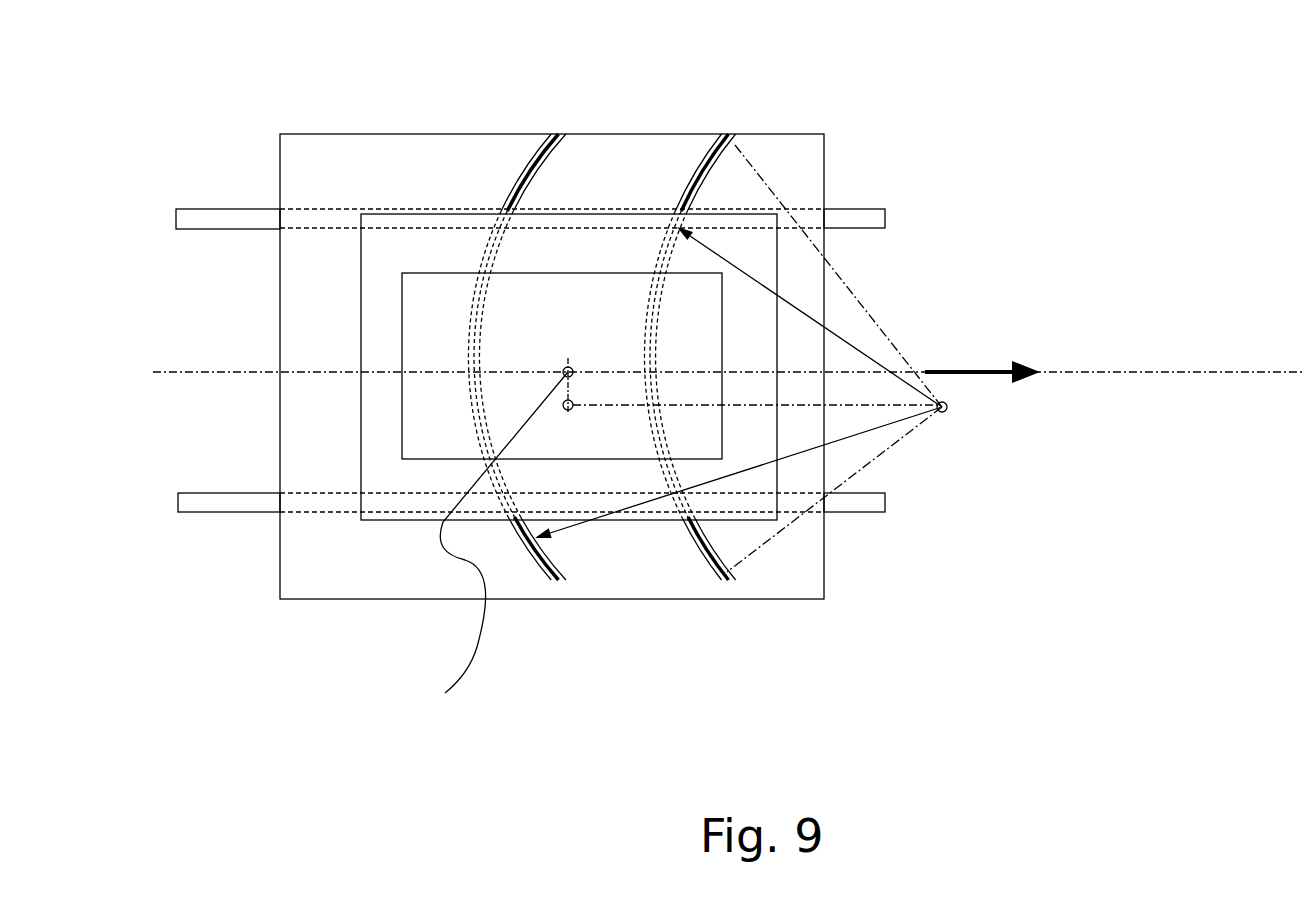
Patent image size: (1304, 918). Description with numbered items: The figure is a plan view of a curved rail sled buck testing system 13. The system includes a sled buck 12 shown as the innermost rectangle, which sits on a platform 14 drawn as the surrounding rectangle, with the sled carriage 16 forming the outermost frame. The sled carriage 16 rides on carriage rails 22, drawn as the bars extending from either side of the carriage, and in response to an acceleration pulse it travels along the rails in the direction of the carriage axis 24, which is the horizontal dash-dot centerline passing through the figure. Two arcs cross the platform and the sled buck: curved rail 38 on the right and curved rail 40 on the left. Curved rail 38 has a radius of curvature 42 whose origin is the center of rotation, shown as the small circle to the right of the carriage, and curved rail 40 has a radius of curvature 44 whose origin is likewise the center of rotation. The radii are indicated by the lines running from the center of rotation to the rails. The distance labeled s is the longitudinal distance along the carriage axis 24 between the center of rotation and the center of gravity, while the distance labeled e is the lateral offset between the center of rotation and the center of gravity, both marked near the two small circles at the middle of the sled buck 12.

The sled buck 12 is at (570, 290).
The curved rail sled buck testing system 13 is at (1043, 118).
The platform 14 is at (607, 477).
The sled carriage 16 is at (342, 582).
The carriage rails 22 is at (228, 220).
The carriage axis 24 is at (218, 370).
The curved rail 38 is at (712, 160).
The curved rail 40 is at (543, 170).
The radius of curvature 42 is at (767, 287).
The radius of curvature 44 is at (750, 472).